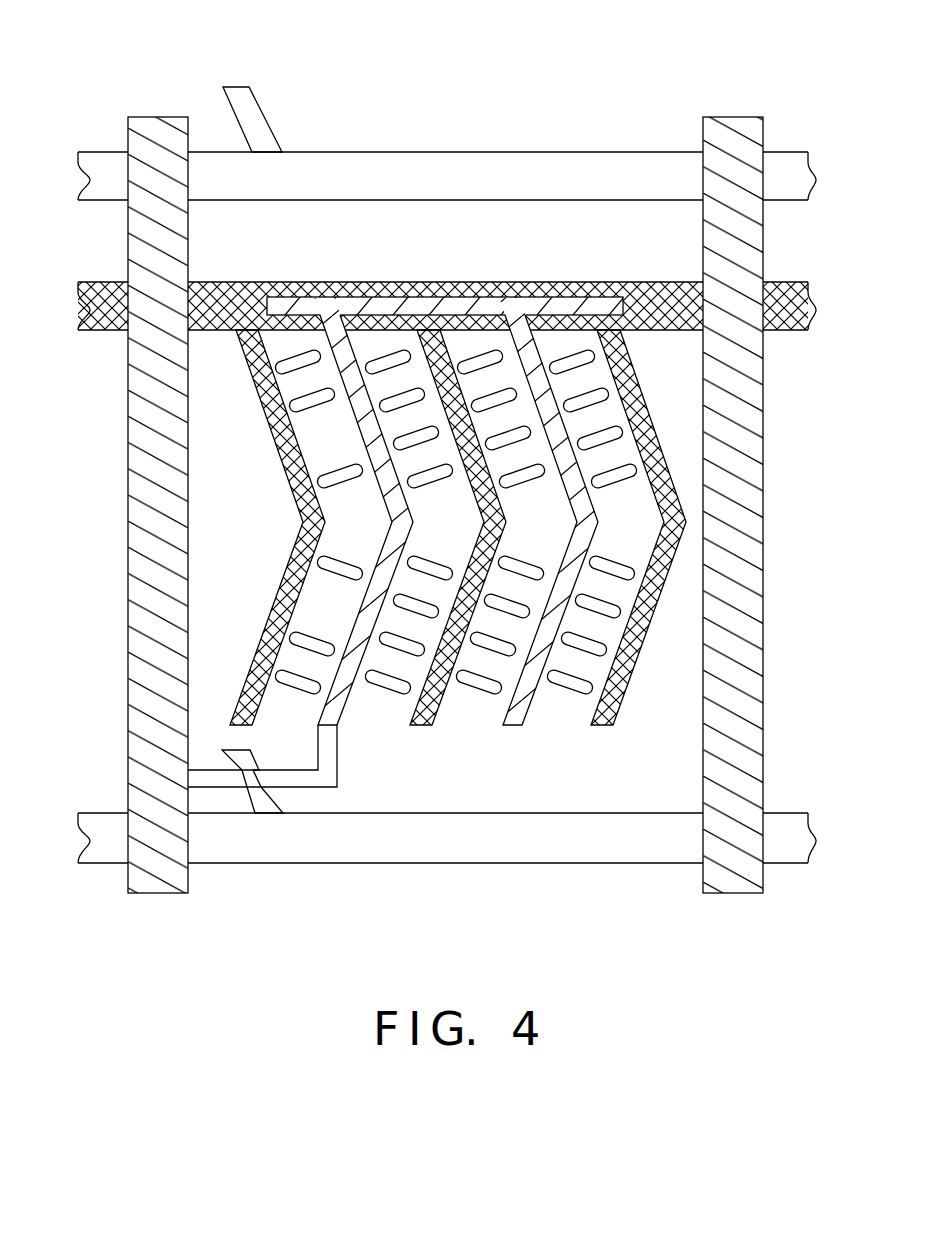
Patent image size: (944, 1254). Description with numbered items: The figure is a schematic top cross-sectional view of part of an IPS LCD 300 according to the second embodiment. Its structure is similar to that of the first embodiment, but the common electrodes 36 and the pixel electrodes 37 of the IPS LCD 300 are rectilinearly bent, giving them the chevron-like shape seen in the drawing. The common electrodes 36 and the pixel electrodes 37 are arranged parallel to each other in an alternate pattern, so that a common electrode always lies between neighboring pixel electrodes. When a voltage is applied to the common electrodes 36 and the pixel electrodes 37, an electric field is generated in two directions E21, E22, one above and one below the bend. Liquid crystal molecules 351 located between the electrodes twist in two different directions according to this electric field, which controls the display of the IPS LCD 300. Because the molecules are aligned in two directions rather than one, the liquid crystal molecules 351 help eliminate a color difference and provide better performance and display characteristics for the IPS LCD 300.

The IPS LCD 300 is at (460, 70).
The liquid crystal molecules 351 is at (287, 366).
The common electrodes 36 is at (285, 452).
The pixel electrodes 37 is at (393, 492).
The electric field direction E21 is at (352, 443).
The electric field direction E22 is at (340, 627).